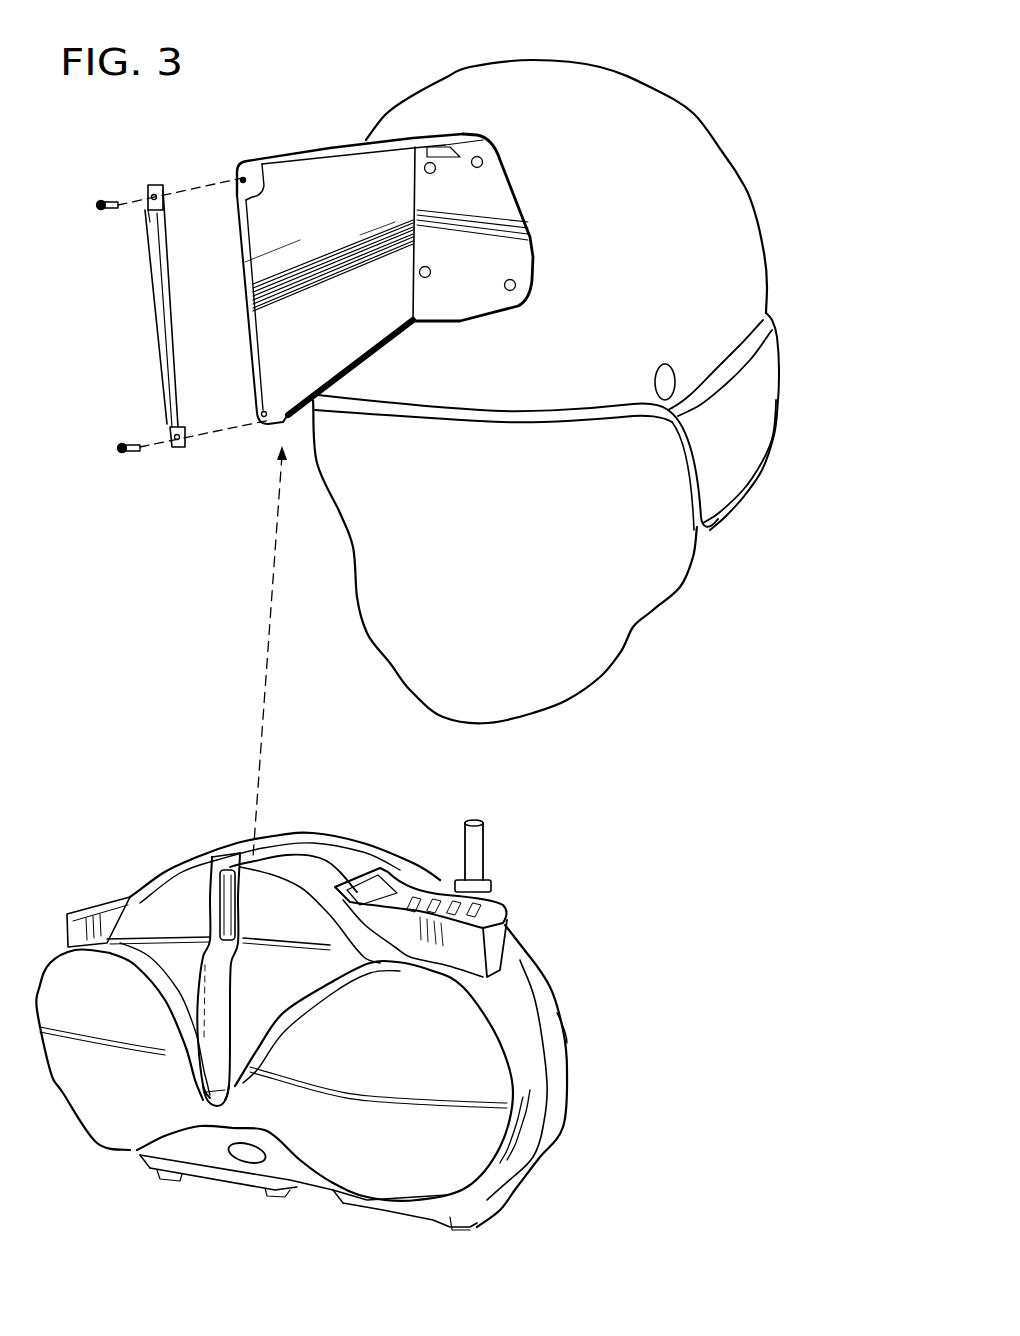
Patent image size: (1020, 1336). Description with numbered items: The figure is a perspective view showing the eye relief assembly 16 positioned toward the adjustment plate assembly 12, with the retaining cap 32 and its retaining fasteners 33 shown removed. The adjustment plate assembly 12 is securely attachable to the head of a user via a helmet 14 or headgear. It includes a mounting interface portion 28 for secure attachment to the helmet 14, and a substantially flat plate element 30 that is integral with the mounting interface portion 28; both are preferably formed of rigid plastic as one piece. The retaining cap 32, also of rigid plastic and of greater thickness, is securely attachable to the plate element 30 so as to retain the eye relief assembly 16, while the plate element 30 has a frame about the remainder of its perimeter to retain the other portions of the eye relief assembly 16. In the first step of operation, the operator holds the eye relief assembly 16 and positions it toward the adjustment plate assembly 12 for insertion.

The adjustment plate assembly 12 is at (283, 148).
The helmet 14 is at (685, 127).
The eye relief assembly 16 is at (562, 1139).
The mounting interface portion 28 is at (492, 192).
The plate element 30 is at (342, 183).
The retaining cap 32 is at (157, 315).
The retaining fasteners 33 is at (125, 450).